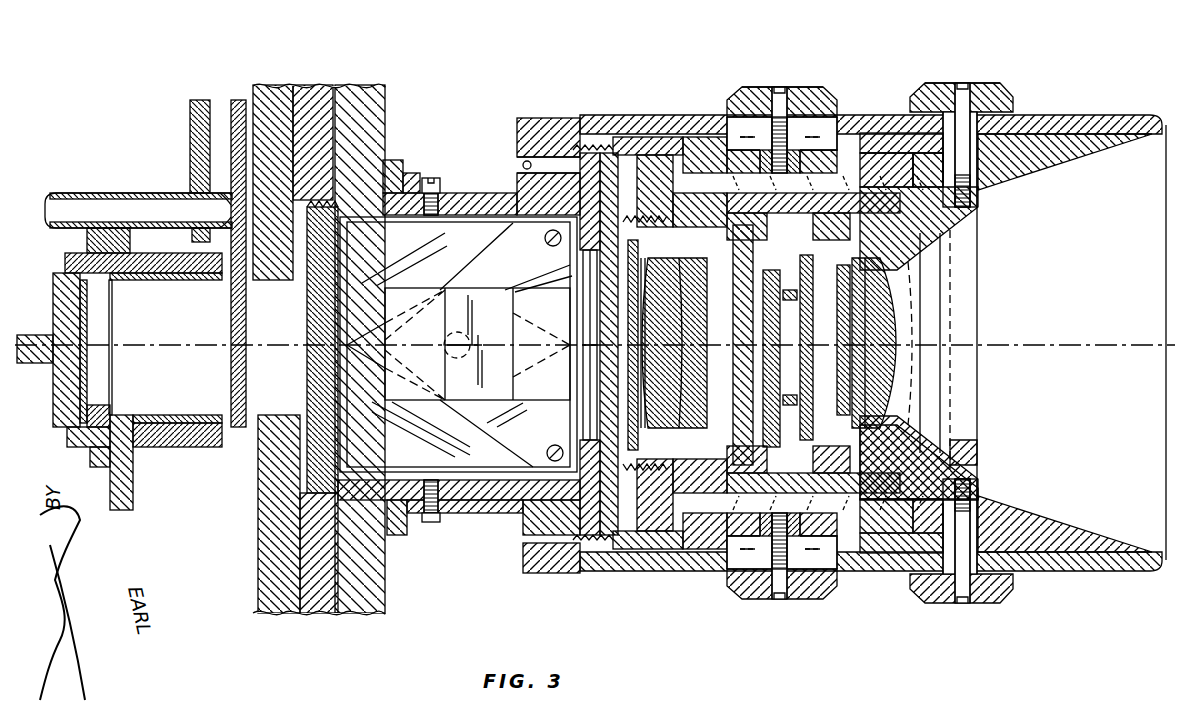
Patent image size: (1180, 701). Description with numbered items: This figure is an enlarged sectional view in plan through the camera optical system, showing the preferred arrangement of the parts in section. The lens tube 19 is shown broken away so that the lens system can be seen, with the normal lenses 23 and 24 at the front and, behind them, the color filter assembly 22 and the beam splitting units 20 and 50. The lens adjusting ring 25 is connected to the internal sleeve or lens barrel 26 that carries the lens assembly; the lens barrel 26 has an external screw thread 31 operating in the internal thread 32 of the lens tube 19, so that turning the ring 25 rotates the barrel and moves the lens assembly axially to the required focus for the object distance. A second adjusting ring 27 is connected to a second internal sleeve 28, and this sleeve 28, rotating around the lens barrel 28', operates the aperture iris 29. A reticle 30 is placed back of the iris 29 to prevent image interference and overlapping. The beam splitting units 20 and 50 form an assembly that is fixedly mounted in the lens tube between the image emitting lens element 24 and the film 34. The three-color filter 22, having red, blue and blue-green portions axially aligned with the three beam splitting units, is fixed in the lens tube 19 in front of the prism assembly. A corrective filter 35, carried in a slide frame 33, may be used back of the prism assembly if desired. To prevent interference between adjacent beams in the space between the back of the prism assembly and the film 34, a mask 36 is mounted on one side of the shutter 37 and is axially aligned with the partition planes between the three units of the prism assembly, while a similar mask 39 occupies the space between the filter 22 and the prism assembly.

The lens tube 19 is at (1077, 113).
The beam splitting unit 20 is at (510, 257).
The color filter assembly 22 is at (597, 308).
The normal lens 23 is at (893, 327).
The image emitting lens element 24 is at (703, 358).
The lens adjusting ring 25 is at (815, 87).
The internal sleeve or lens barrel 26 is at (936, 233).
The second adjusting ring 27 is at (1003, 83).
The second internal sleeve 28 is at (961, 443).
The lens barrel 28' is at (920, 444).
The aperture iris 29 is at (773, 318).
The reticle 30 is at (753, 297).
The external screw thread 31 is at (853, 140).
The internal thread 32 is at (897, 140).
The slide frame 33 is at (320, 603).
The film 34 is at (87, 313).
The corrective filter 35 is at (313, 313).
The mask 36 is at (277, 403).
The shutter 37 is at (233, 388).
The mask 39 is at (597, 388).
The beam splitting unit 50 is at (453, 377).